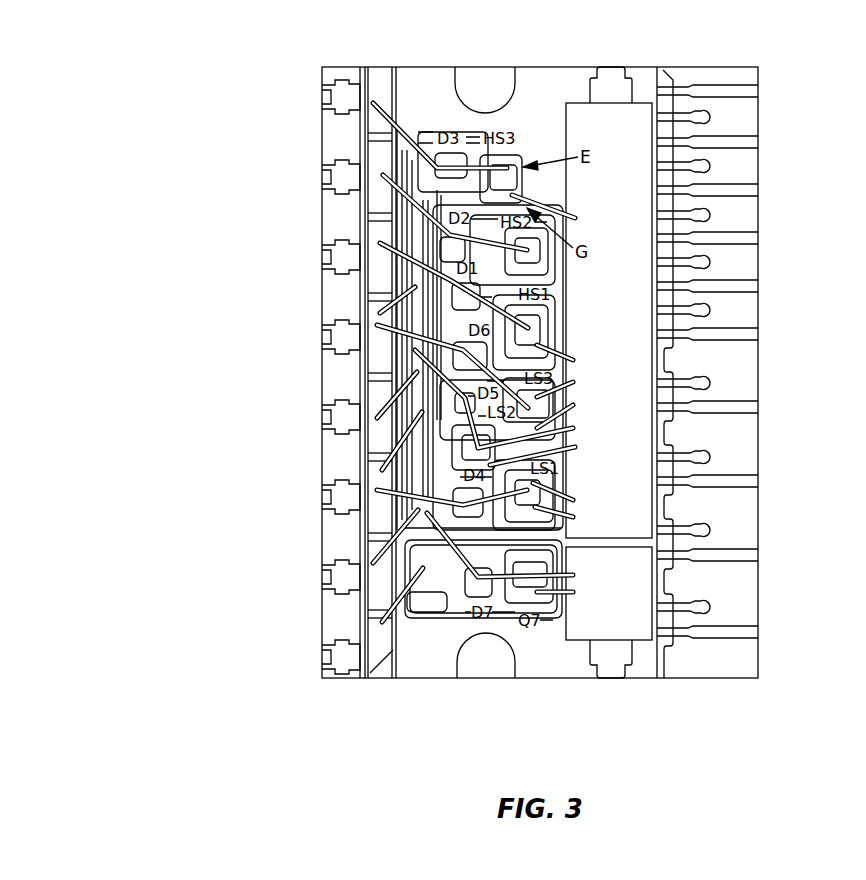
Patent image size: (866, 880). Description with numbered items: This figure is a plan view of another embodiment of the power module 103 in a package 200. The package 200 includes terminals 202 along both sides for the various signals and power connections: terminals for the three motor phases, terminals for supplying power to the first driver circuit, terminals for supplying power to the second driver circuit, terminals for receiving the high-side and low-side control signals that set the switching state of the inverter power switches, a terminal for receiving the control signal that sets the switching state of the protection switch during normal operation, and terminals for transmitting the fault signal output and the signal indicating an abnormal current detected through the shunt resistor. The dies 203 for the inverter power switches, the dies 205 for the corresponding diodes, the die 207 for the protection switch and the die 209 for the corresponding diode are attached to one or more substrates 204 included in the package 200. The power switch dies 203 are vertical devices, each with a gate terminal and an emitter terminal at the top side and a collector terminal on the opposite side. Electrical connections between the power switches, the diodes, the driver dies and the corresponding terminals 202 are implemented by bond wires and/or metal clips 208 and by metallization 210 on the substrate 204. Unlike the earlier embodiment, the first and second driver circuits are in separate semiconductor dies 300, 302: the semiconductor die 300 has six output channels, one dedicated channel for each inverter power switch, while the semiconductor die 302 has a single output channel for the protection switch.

The power module 103 is at (60, 32).
The package 200 is at (574, 67).
The terminals 202 is at (349, 66).
The dies for the inverter power switches 203 is at (518, 155).
The substrates 204 is at (427, 132).
The dies for the corresponding diodes 205 is at (462, 155).
The die for the protection switch 207 is at (547, 603).
The bond wires and/or metal clips 208 is at (385, 616).
The die for the corresponding diode 209 is at (473, 600).
The metallization 210 is at (443, 565).
The semiconductor die 300 is at (594, 353).
The semiconductor die 302 is at (594, 626).